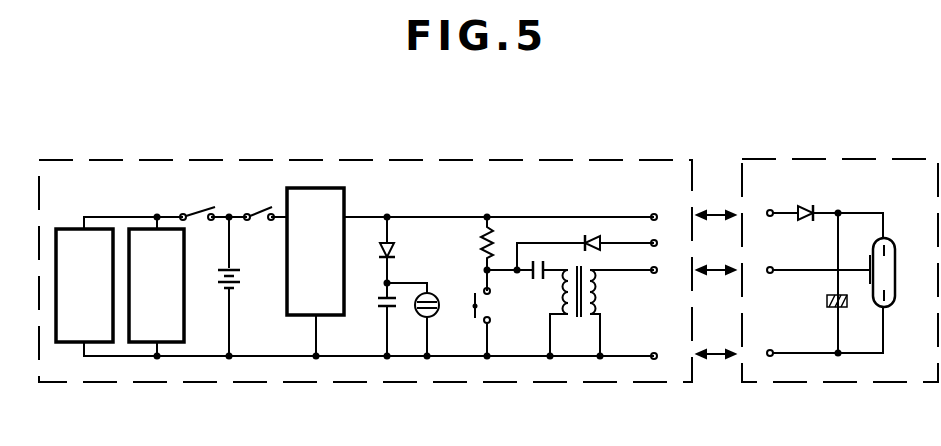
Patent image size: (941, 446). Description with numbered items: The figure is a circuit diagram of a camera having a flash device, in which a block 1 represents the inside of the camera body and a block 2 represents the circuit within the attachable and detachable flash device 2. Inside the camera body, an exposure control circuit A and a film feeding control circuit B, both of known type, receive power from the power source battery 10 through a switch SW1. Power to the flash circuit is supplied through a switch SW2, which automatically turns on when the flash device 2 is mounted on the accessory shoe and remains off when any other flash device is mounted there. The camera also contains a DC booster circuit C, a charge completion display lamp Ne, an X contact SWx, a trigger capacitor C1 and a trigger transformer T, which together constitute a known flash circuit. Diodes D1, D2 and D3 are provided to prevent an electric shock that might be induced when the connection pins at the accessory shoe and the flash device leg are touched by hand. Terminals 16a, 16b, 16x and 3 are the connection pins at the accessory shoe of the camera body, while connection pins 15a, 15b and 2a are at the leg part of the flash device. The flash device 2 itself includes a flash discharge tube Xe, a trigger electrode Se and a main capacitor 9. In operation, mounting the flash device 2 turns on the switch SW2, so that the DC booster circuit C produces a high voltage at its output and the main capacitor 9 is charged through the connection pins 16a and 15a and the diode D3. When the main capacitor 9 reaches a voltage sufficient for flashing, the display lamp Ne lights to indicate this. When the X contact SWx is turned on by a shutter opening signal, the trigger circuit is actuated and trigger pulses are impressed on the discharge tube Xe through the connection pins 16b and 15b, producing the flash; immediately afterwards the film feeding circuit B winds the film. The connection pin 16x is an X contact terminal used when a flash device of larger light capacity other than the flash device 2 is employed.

The block representing inside of camera body 1 is at (438, 160).
The flash device 2 is at (795, 160).
The connection pin 3 is at (654, 353).
The main capacitor 9 is at (829, 306).
The power source battery 10 is at (240, 281).
The connection pin 15a is at (767, 212).
The connection pin 15b is at (808, 288).
The connection pin 16a is at (660, 203).
The X contact terminal connection pin 16x is at (664, 232).
The connection pin 16b is at (656, 273).
The connection pin 2a is at (767, 352).
The exposure control circuit A is at (84, 285).
The film feeding control circuit B is at (156, 285).
The DC booster circuit C is at (315, 251).
The switch SW1 is at (200, 210).
The switch SW2 is at (260, 210).
The X contact SWx is at (469, 286).
The diode D1 is at (404, 250).
The diode D2 is at (585, 244).
The diode D3 is at (840, 208).
The charge completion display lamp Ne is at (424, 309).
The trigger capacitor C1 is at (524, 289).
The trigger transformer T is at (602, 311).
The flash discharge tube Xe is at (900, 272).
The trigger electrode Se is at (869, 283).